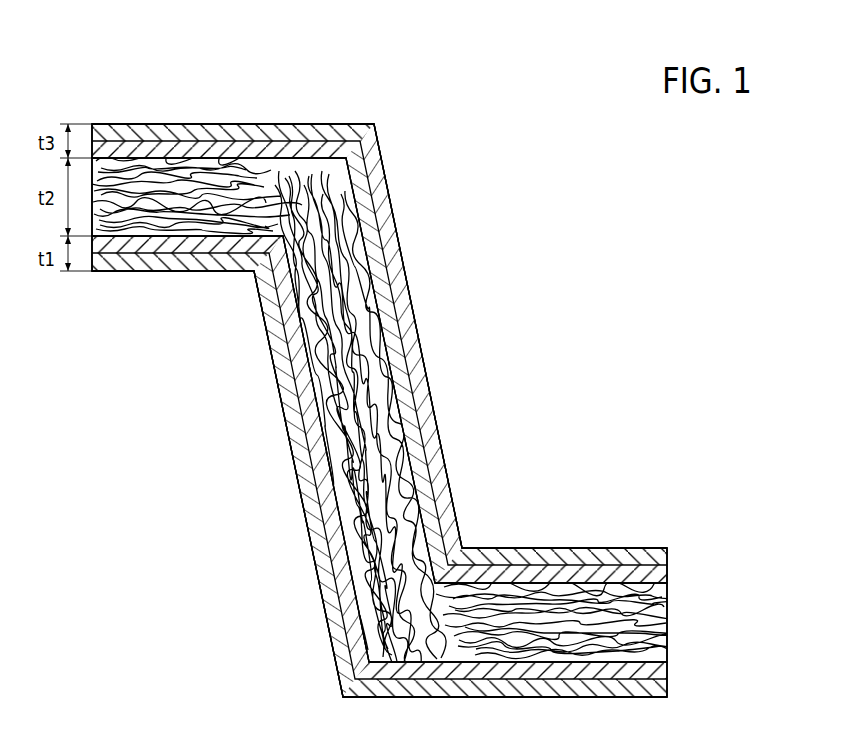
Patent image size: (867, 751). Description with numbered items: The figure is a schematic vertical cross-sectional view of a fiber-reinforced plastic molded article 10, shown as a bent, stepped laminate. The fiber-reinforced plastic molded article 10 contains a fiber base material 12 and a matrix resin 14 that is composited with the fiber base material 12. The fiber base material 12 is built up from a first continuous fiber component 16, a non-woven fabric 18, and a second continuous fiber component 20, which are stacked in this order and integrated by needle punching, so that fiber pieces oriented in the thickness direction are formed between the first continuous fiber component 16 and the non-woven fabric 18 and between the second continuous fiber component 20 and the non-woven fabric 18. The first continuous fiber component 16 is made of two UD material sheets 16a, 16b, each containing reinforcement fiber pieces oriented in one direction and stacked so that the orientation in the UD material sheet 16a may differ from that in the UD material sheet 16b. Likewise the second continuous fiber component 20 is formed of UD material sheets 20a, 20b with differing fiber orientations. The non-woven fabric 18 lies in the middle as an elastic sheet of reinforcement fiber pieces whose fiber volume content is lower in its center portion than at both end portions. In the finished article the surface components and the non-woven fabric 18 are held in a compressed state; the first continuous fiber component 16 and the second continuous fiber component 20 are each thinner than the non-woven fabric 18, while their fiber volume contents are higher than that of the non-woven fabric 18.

The fiber-reinforced plastic molded article 10 is at (739, 179).
The fiber base material 12 is at (778, 546).
The matrix resin 14 is at (561, 617).
The first continuous fiber component 16 is at (741, 655).
The UD material sheet 16a is at (655, 690).
The UD material sheet 16b is at (660, 672).
The non-woven fabric 18 is at (667, 607).
The second continuous fiber component 20 is at (741, 546).
The UD material sheet 20a is at (657, 573).
The UD material sheet 20b is at (665, 555).